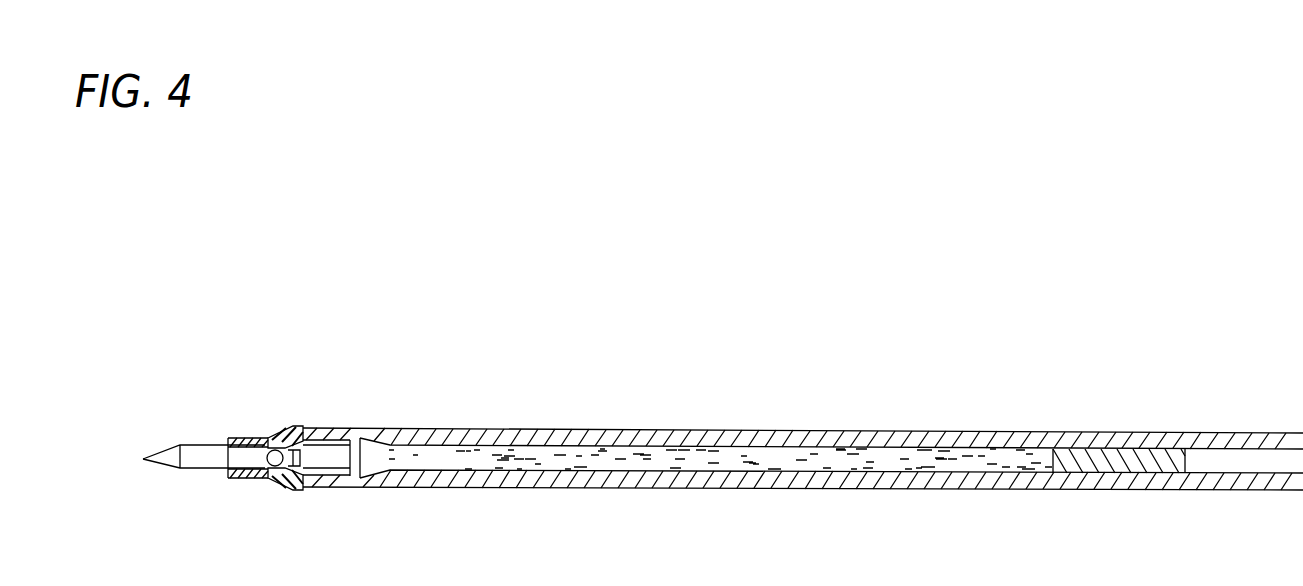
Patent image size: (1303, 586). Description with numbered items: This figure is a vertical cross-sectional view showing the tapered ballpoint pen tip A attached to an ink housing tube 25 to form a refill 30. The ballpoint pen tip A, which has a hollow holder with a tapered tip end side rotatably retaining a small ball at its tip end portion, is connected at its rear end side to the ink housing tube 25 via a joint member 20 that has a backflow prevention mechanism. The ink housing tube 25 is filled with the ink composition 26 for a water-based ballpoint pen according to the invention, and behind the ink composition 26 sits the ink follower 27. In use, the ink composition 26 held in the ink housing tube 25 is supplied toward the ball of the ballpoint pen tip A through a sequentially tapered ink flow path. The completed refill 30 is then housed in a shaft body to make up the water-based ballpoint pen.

The ballpoint pen tip A is at (192, 440).
The joint member 20 is at (297, 430).
The ink housing tube 25 is at (582, 438).
The ink composition 26 is at (900, 460).
The ink follower 27 is at (1125, 463).
The refill 30 is at (742, 418).